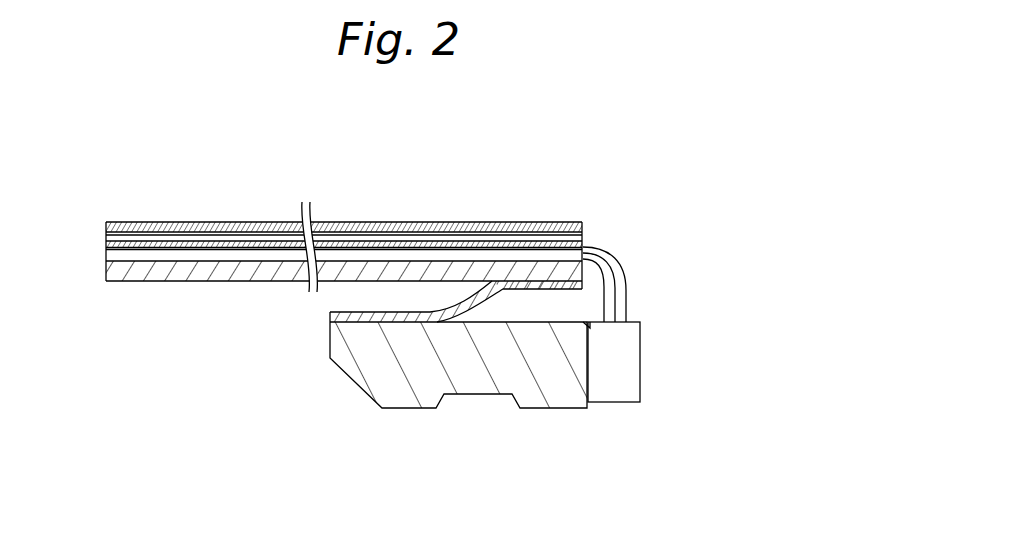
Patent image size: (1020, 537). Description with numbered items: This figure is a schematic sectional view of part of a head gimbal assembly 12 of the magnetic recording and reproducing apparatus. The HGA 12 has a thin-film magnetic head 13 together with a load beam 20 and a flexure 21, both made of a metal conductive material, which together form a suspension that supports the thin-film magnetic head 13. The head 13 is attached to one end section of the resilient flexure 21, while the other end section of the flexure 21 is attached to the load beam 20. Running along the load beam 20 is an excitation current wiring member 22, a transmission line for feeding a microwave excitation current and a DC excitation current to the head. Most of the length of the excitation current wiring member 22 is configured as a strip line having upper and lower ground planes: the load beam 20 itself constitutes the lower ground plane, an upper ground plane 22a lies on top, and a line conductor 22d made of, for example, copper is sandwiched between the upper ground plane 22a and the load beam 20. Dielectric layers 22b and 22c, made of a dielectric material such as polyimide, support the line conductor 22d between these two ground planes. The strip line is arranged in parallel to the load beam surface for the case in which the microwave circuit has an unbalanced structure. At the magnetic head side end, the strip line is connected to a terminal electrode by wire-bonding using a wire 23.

The head gimbal assembly 12 is at (414, 227).
The thin-film magnetic head 13 is at (436, 401).
The load beam 20 is at (243, 270).
The flexure 21 is at (348, 311).
The excitation current wiring member 22 is at (353, 178).
The upper ground plane 22a is at (360, 225).
The dielectric layer 22b is at (423, 236).
The dielectric layer 22c is at (353, 143).
The line conductor 22d is at (476, 245).
The wire 23 is at (609, 257).